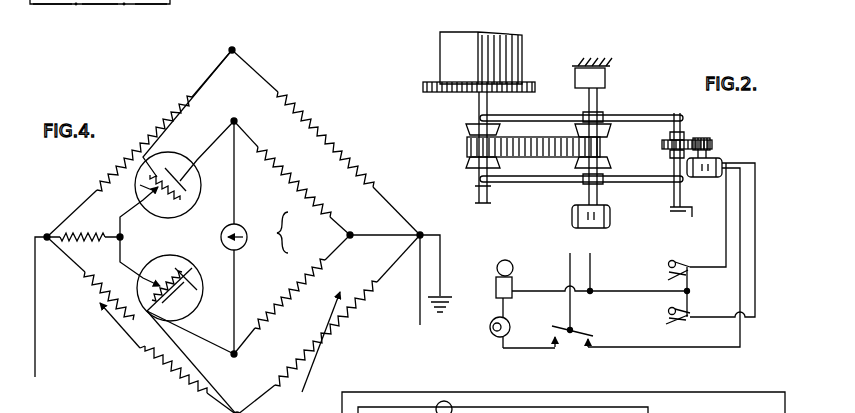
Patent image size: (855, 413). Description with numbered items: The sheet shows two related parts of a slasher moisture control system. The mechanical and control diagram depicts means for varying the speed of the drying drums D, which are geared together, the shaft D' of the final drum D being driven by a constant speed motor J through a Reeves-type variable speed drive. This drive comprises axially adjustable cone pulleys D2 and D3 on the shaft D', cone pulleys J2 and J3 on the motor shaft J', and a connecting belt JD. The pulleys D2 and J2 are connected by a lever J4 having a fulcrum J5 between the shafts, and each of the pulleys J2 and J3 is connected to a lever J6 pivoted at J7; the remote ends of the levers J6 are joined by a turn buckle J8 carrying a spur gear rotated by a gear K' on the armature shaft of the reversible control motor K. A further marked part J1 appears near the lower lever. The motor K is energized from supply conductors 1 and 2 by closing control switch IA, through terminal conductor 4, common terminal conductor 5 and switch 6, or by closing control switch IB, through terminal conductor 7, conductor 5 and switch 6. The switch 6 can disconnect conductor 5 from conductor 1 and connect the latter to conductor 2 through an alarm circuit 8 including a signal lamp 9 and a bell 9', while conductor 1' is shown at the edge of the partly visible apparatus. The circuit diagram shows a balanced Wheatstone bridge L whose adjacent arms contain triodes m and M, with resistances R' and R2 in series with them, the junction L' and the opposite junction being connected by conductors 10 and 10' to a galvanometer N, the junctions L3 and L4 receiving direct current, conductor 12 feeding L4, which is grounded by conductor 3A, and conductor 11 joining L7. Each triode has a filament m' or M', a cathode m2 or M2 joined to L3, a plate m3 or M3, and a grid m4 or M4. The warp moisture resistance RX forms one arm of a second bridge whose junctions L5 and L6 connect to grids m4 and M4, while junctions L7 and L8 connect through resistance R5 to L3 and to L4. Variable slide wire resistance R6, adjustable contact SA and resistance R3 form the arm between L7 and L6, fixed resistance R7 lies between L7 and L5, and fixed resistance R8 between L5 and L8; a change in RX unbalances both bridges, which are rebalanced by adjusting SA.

In FIG. 4, the bridge junction L5 is at (233, 49).
In FIG. 4, the bridge junction L' is at (233, 109).
In FIG. 4, the bridge junction L7 is at (47, 236).
In FIG. 4, the bridge junction L3 is at (123, 237).
In FIG. 4, the bridge junction L4 is at (350, 234).
In FIG. 4, the bridge junction L8 is at (420, 233).
In FIG. 4, the bridge junction L6 is at (241, 412).
In FIG. 4, the Wheatstone bridge L is at (278, 232).
In FIG. 4, the fixed resistance R7 is at (153, 127).
In FIG. 4, the second fixed resistance R8 is at (318, 128).
In FIG. 4, the resistance R2 is at (298, 189).
In FIG. 4, the resistance R' is at (292, 294).
In FIG. 4, the resistance R5 is at (87, 234).
In FIG. 4, the variable slide wire resistance R6 is at (90, 283).
In FIG. 4, the resistance R3 is at (178, 376).
In FIG. 4, the warp moisture responsive resistance RX is at (333, 330).
In FIG. 4, the triode tube element m is at (168, 177).
In FIG. 4, the filament m' is at (139, 212).
In FIG. 4, the cathode m2 is at (136, 185).
In FIG. 4, the plate m3 is at (185, 176).
In FIG. 4, the grid m4 is at (190, 198).
In FIG. 4, the triode tube element M is at (170, 281).
In FIG. 4, the filament M' is at (126, 261).
In FIG. 4, the cathode M2 is at (146, 289).
In FIG. 4, the plate M3 is at (186, 300).
In FIG. 4, the grid M4 is at (186, 279).
In FIG. 4, the galvanometer N is at (222, 235).
In FIG. 2, the galvanometer N is at (440, 406).
In FIG. 4, the conductor 10 is at (247, 172).
In FIG. 2, the conductor 10 is at (563, 392).
In FIG. 4, the conductor 10' is at (247, 303).
In FIG. 4, the conductor 11 is at (36, 366).
In FIG. 4, the conductor 12 is at (418, 298).
In FIG. 4, the conductor 3A is at (441, 240).
In FIG. 4, the adjustable contact SA is at (100, 306).
In FIG. 4, the terminal conductor 4 is at (315, 352).
In FIG. 2, the terminal conductor 4 is at (725, 201).
In FIG. 2, the drying drum D is at (462, 57).
In FIG. 2, the shaft D' is at (479, 97).
In FIG. 2, the cone pulley D2 is at (470, 135).
In FIG. 2, the cone pulley D3 is at (468, 163).
In FIG. 2, the connecting belt JD is at (543, 158).
In FIG. 2, the constant speed motor J is at (577, 223).
In FIG. 2, the shaft J' is at (601, 77).
In FIG. 2, the shaft J1 is at (522, 182).
In FIG. 2, the cone pulley J2 is at (612, 132).
In FIG. 2, the cone pulley J3 is at (612, 151).
In FIG. 2, the lever J4 is at (515, 116).
In FIG. 2, the fulcrum J5 is at (541, 117).
In FIG. 2, the lever J6 is at (664, 116).
In FIG. 2, the pivot J7 is at (635, 116).
In FIG. 2, the turn buckle J8 is at (683, 139).
In FIG. 2, the reversible control motor K is at (716, 161).
In FIG. 2, the gear K' is at (714, 139).
In FIG. 2, the supply conductor 1 is at (557, 291).
In FIG. 2, the supply conductor 2 is at (591, 272).
In FIG. 2, the common terminal conductor 5 is at (738, 289).
In FIG. 2, the switch 6 is at (575, 332).
In FIG. 2, the terminal conductor 7 is at (756, 292).
In FIG. 2, the alarm circuit 8 is at (540, 349).
In FIG. 2, the signal lamp 9 is at (487, 326).
In FIG. 2, the bell 9' is at (505, 267).
In FIG. 2, the control switch IA is at (685, 267).
In FIG. 2, the control switch IB is at (666, 320).
In FIG. 2, the conductor 1' is at (662, 404).